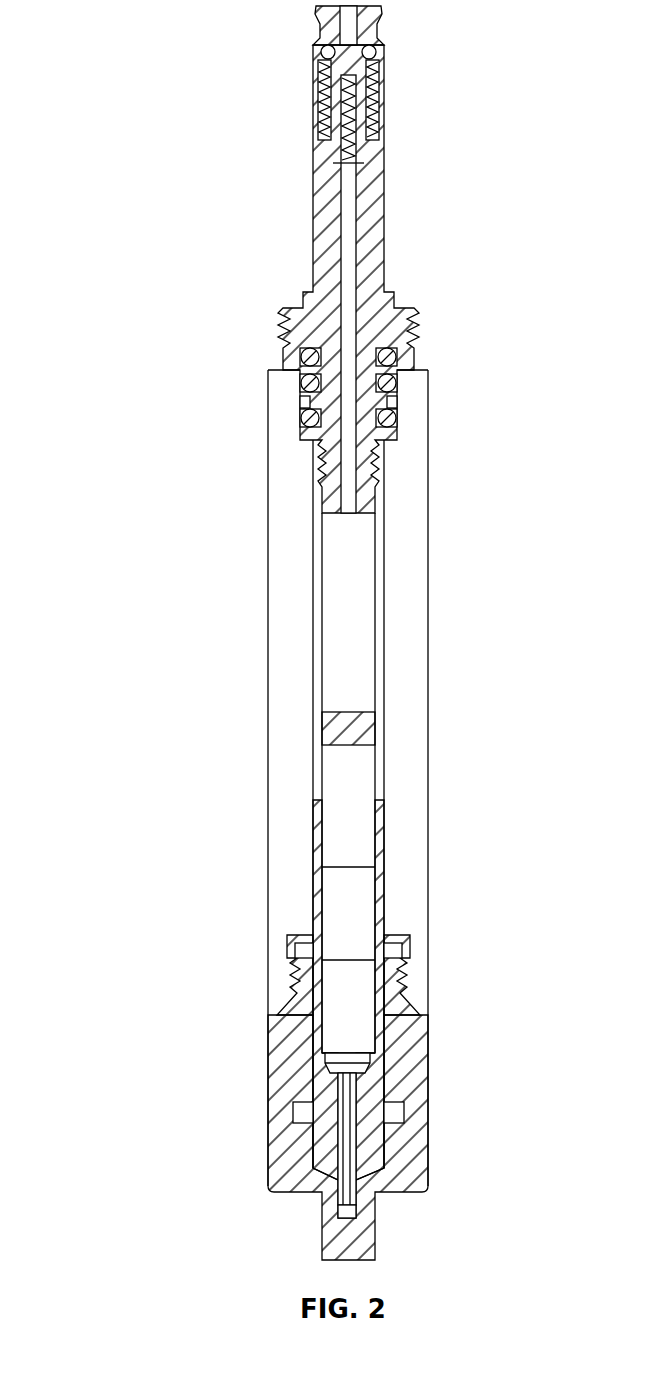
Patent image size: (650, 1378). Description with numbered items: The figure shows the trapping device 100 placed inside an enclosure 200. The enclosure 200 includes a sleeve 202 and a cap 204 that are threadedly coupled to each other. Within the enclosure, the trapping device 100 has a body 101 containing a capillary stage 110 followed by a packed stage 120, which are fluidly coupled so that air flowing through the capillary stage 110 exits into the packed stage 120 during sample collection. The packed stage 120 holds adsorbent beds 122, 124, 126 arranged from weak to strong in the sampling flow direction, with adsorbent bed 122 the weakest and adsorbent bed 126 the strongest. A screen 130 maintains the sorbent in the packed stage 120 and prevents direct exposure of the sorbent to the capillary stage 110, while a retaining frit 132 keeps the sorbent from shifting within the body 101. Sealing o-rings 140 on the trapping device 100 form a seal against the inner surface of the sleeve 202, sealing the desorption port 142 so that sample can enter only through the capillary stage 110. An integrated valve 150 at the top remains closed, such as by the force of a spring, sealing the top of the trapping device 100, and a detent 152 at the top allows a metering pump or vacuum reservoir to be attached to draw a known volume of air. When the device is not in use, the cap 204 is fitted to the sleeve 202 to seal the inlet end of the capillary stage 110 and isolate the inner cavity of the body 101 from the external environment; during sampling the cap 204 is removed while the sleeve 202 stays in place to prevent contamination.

The trapping device 100 is at (118, 48).
The body 101 is at (318, 558).
The capillary stage 110 is at (355, 1140).
The packed stage 120 is at (338, 800).
The adsorbent bed 122 is at (338, 990).
The adsorbent bed 124 is at (318, 907).
The adsorbent bed 126 is at (311, 852).
The screen 130 is at (345, 1062).
The retaining frit 132 is at (340, 722).
The sealing o-rings 140 is at (301, 359).
The desorption port 142 is at (398, 398).
The integrated valve 150 is at (313, 78).
The detent 152 is at (320, 32).
The enclosure 200 is at (415, 717).
The sleeve 202 is at (428, 778).
The cap 204 is at (427, 1058).